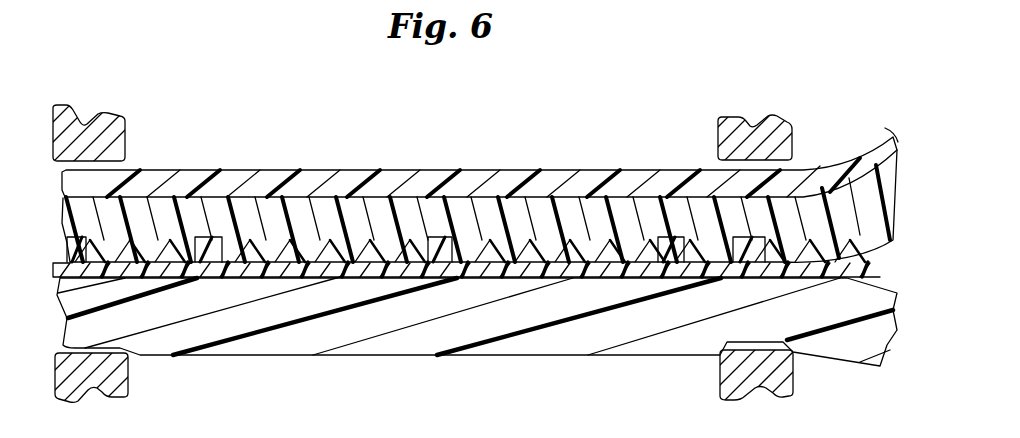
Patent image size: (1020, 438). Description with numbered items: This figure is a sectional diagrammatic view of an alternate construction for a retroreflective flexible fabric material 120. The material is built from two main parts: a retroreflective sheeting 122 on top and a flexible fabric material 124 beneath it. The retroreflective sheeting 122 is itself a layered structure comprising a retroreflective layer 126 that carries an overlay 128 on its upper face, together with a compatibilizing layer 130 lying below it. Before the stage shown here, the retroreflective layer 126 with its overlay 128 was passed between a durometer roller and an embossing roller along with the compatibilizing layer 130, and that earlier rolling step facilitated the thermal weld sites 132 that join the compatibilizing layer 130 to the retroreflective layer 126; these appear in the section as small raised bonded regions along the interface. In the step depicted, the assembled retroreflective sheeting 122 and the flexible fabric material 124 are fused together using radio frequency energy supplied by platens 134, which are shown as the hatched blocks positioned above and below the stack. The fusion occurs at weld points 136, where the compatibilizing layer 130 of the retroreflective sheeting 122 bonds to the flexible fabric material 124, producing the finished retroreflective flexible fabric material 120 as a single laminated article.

The retroreflective flexible fabric material 120 is at (310, 152).
The retroreflective sheeting 122 is at (903, 265).
The flexible fabric material 124 is at (593, 353).
The retroreflective layer 126 is at (543, 197).
The overlay 128 is at (596, 170).
The compatibilizing layer 130 is at (478, 277).
The thermal weld sites 132 is at (430, 244).
The platens 134 is at (790, 127).
The weld points 136 is at (730, 240).